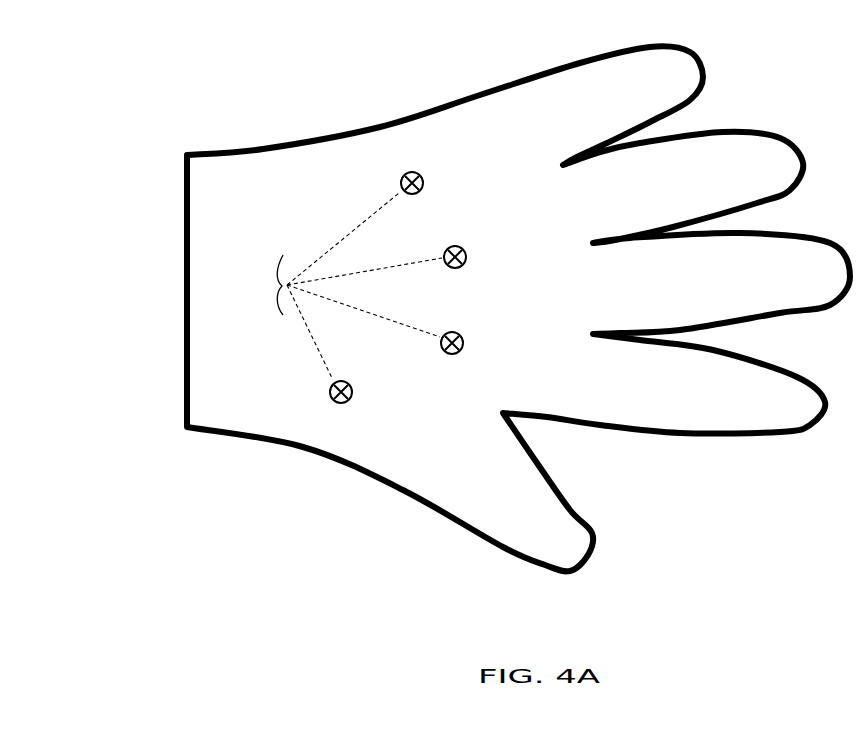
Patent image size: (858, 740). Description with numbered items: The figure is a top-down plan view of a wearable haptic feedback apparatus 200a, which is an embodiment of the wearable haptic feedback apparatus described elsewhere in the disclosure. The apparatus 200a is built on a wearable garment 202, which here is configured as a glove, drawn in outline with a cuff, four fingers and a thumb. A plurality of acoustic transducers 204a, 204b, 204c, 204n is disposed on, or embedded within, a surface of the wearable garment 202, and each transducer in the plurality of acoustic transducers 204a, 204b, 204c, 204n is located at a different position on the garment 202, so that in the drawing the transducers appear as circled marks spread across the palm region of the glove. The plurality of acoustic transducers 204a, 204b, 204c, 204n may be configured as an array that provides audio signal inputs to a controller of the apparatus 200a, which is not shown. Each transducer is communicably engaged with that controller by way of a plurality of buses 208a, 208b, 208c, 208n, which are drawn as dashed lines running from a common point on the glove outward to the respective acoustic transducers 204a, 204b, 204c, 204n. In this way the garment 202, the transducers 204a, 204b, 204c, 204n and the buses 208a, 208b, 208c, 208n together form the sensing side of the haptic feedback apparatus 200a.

The wearable haptic feedback apparatus 200a is at (155, 107).
The wearable garment 202 is at (263, 146).
The acoustic transducer 204a is at (423, 172).
The acoustic transducer 204b is at (465, 249).
The acoustic transducer 204c is at (464, 339).
The acoustic transducer 204n is at (350, 402).
The bus 208a is at (330, 244).
The bus 208b is at (398, 263).
The bus 208c is at (423, 333).
The bus 208n is at (332, 370).